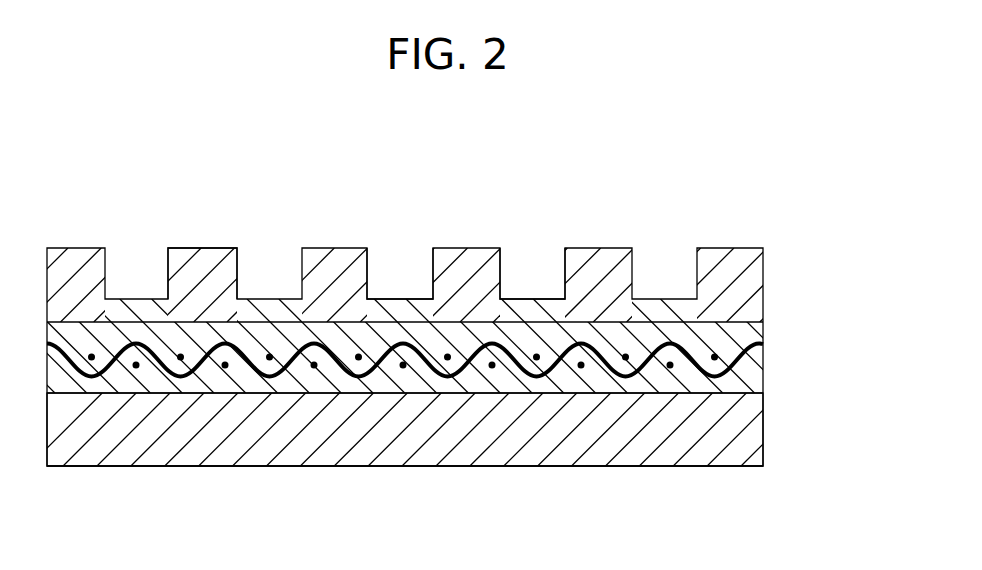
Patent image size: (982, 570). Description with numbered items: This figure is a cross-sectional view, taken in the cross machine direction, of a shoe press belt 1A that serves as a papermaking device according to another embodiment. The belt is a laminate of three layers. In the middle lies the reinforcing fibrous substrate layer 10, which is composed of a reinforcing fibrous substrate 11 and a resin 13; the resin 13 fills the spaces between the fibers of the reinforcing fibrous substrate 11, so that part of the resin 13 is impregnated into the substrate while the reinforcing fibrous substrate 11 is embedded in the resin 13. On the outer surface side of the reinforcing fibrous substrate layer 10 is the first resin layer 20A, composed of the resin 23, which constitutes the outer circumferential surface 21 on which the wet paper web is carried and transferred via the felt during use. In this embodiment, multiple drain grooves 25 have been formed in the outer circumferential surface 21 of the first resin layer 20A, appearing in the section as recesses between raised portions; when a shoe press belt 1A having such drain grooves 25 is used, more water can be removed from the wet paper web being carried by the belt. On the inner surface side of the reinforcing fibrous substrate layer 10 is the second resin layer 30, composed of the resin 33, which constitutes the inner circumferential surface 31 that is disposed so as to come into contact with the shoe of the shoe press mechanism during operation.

The shoe press belt 1A is at (734, 206).
The first resin layer 20A is at (763, 285).
The outer circumferential surface 21 is at (204, 247).
The resin 23 is at (590, 286).
The drain grooves 25 is at (532, 268).
The reinforcing fibrous substrate layer 10 is at (763, 360).
The reinforcing fibrous substrate 11 is at (534, 361).
The resin 13 is at (596, 364).
The second resin layer 30 is at (763, 440).
The inner circumferential surface 31 is at (193, 467).
The resin 33 is at (332, 404).